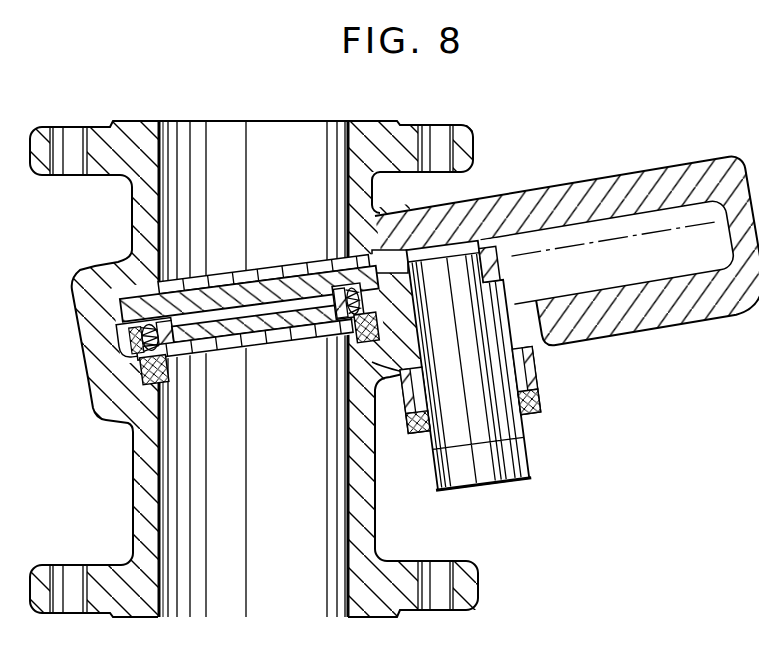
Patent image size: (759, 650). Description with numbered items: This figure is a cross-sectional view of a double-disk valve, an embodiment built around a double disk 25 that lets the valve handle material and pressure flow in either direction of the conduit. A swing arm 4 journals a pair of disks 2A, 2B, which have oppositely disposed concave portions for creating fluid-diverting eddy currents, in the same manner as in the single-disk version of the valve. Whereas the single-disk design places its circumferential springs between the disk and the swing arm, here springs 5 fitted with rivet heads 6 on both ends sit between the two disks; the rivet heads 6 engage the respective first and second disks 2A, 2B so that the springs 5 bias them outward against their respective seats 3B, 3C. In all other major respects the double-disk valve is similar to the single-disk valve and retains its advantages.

The first disk 2A is at (262, 293).
The second disk 2B is at (300, 325).
The seat 3B is at (135, 293).
The seat 3C is at (158, 382).
The swing arm 4 is at (402, 295).
The springs 5 is at (323, 278).
The rivet heads 6 is at (348, 282).
The double disk 25 is at (183, 281).